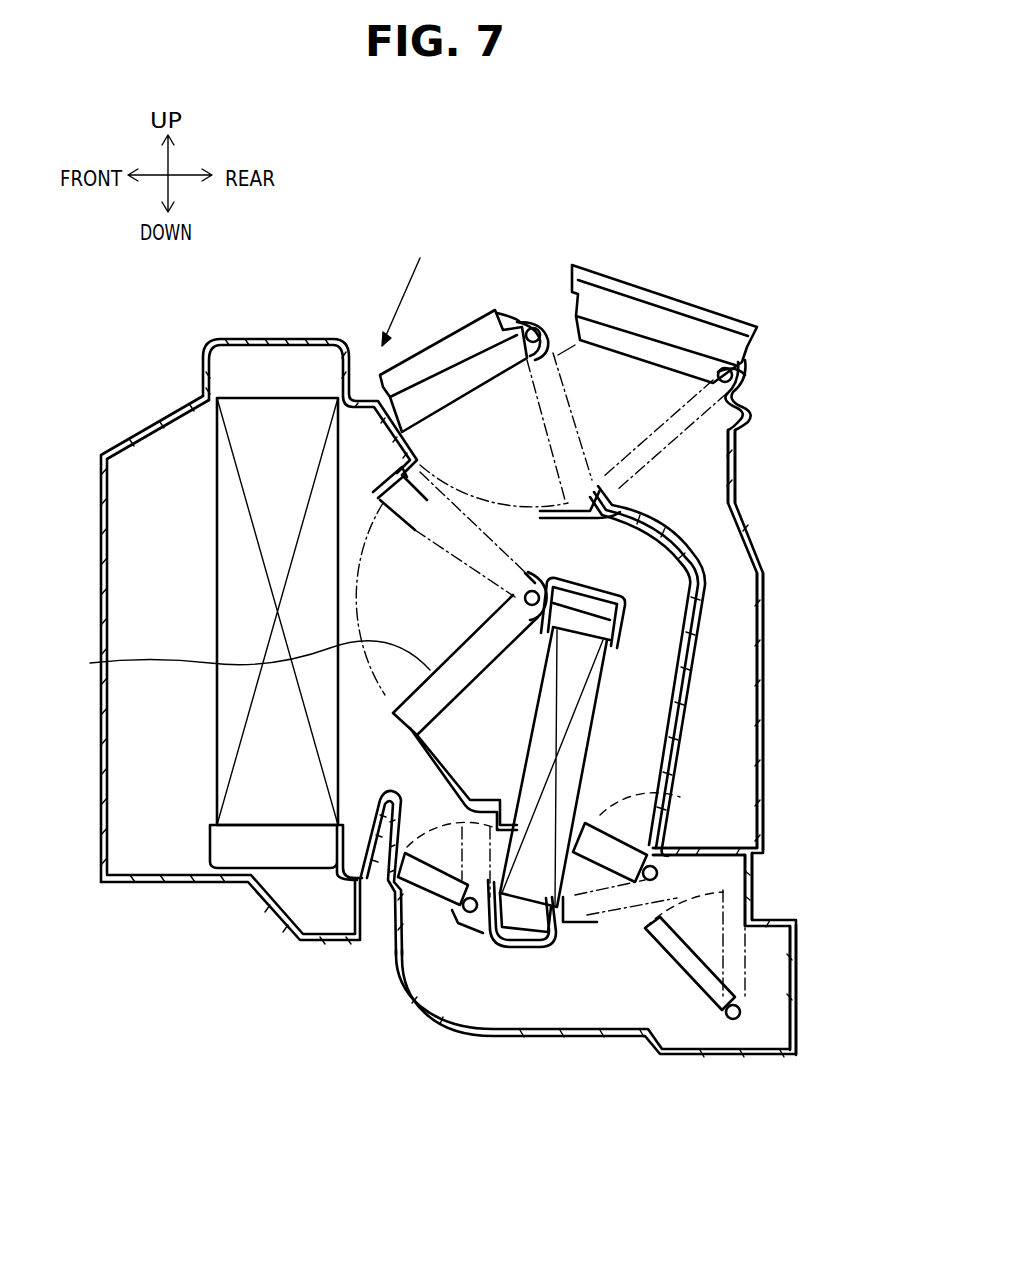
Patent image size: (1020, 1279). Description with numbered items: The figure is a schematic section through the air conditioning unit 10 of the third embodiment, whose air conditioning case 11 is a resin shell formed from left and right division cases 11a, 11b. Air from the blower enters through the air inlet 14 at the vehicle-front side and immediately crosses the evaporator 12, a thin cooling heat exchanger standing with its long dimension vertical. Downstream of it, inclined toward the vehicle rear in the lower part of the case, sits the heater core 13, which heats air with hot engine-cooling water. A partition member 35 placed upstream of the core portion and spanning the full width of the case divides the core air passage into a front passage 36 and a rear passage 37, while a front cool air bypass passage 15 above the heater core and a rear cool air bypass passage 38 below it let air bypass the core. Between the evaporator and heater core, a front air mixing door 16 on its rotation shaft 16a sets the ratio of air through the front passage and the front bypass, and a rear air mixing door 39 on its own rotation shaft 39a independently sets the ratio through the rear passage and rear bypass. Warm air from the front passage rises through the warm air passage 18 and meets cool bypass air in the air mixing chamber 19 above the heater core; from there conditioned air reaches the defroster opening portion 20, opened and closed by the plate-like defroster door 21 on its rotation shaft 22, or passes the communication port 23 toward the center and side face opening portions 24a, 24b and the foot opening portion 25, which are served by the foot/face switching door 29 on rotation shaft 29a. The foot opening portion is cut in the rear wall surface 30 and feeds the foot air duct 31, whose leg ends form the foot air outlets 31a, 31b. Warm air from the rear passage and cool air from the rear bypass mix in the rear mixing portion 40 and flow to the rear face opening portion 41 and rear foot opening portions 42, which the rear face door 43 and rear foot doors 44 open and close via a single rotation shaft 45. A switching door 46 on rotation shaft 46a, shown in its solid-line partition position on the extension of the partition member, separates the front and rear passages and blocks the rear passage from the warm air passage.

The air conditioning unit 10 is at (406, 285).
The air conditioning case 11 is at (315, 388).
The left division case 11a is at (315, 388).
The right division case 11b is at (238, 338).
The evaporator 12 is at (267, 780).
The heater core 13 is at (573, 883).
The air inlet 14 is at (157, 503).
The cool air bypass passage 15 is at (407, 543).
The front air mixing door 16 is at (241, 660).
The rotation shaft 16a is at (627, 610).
The warm air passage 18 is at (613, 720).
The air mixing chamber 19 is at (483, 503).
The defroster opening portion 20 is at (464, 345).
The defroster door 21 is at (470, 340).
The rotation shaft 22 is at (527, 313).
The communication port 23 is at (560, 358).
The center face opening portion 24a is at (693, 298).
The side face opening portion 24b is at (693, 298).
The foot opening portion 25 is at (680, 457).
The foot/face switching door 29 is at (680, 333).
The rotation shaft 29a is at (733, 377).
The rear wall surface 30 is at (691, 671).
The foot air duct 31 is at (767, 635).
The foot air outlet 31a is at (810, 889).
The foot air outlet 31b is at (760, 853).
The partition member 35 is at (417, 752).
The front passage 36 is at (527, 720).
The rear passage 37 is at (533, 903).
The rear cool air bypass passage 38 is at (487, 982).
The rear air mixing door 39 is at (407, 980).
The rotation shaft 39a is at (468, 912).
The rear mixing portion 40 is at (640, 967).
The rear face opening portion 41 is at (829, 1011).
The rear foot opening portion 42 is at (782, 985).
The rear face door 43 is at (701, 993).
The rear foot door 44 is at (695, 987).
The rotation shaft 45 is at (733, 1020).
The switching door 46 is at (607, 833).
The rotation shaft 46a is at (677, 853).